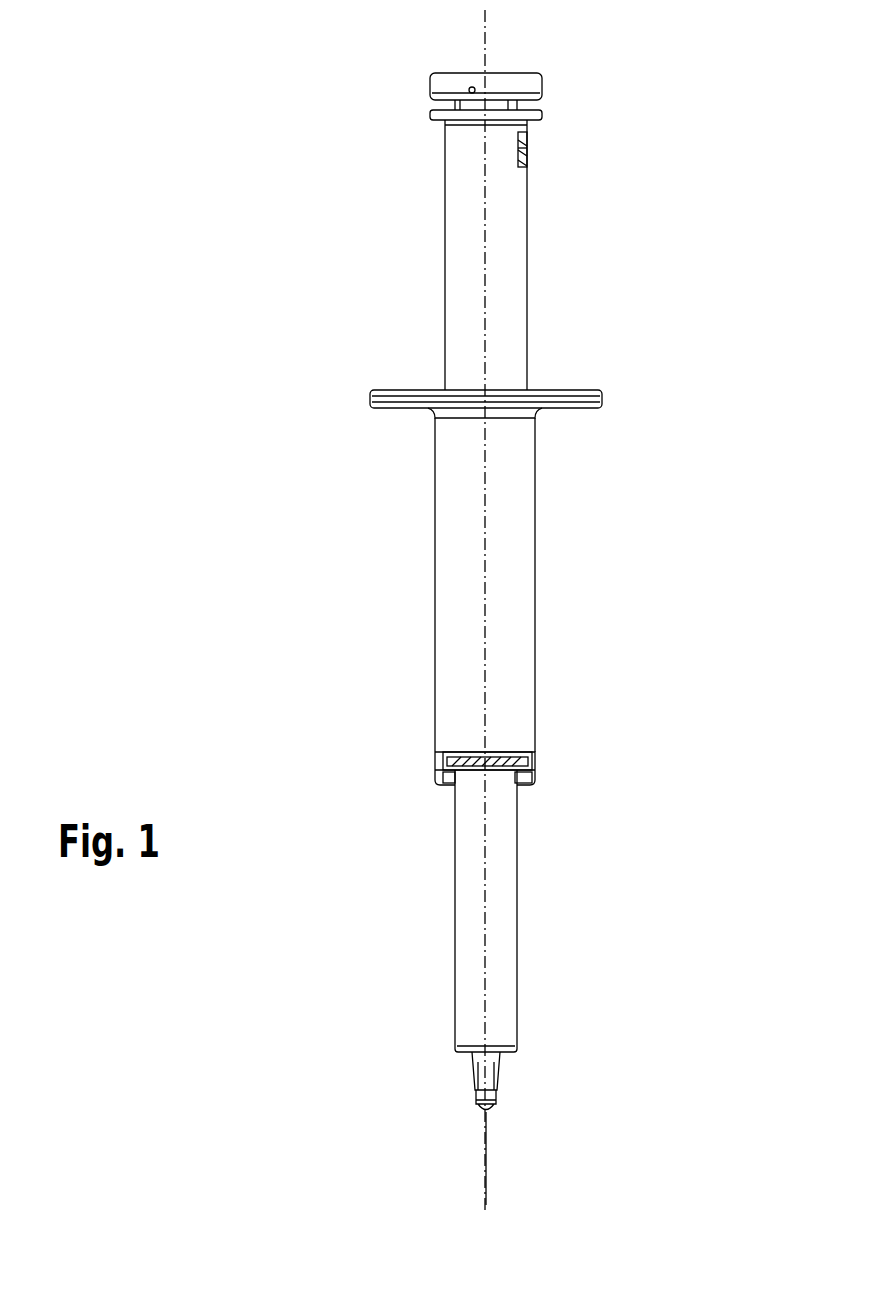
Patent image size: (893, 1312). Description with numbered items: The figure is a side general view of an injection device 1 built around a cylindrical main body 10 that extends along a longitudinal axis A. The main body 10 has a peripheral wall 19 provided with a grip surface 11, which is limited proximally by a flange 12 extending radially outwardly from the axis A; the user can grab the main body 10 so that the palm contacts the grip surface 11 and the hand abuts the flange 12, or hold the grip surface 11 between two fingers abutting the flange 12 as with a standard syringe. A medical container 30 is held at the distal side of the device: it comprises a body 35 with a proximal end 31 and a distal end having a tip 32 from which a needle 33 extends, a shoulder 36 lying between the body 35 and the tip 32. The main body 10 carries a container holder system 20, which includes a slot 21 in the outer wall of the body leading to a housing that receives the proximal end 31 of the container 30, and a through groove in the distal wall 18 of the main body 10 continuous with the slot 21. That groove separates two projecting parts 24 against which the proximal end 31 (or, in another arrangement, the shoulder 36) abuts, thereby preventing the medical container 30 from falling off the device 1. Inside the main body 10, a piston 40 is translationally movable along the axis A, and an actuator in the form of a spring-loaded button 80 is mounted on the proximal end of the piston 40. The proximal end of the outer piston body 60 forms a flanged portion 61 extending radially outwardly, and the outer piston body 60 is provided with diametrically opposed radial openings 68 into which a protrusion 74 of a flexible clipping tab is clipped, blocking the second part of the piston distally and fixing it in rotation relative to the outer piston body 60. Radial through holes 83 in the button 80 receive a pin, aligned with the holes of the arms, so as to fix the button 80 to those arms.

The longitudinal axis A is at (486, 50).
The injection device 1 is at (404, 532).
The main body 10 is at (501, 550).
The grip surface 11 is at (537, 556).
The flange 12 is at (604, 393).
The distal wall 18 is at (452, 802).
The peripheral wall 19 is at (537, 676).
The container holder system 20 is at (465, 806).
The slot 21 is at (537, 752).
The projecting parts 24 is at (436, 790).
The medical container 30 is at (484, 987).
The proximal end 31 is at (497, 758).
The tip 32 is at (500, 1073).
The needle 33 is at (490, 1150).
The body 35 is at (518, 903).
The shoulder 36 is at (472, 1057).
The piston 40 is at (466, 224).
The outer piston body 60 is at (528, 245).
The flanged portion 61 is at (543, 112).
The radial openings 68 is at (528, 134).
The protrusion 74 is at (528, 150).
The button 80 is at (430, 84).
The radial through holes 83 is at (469, 92).